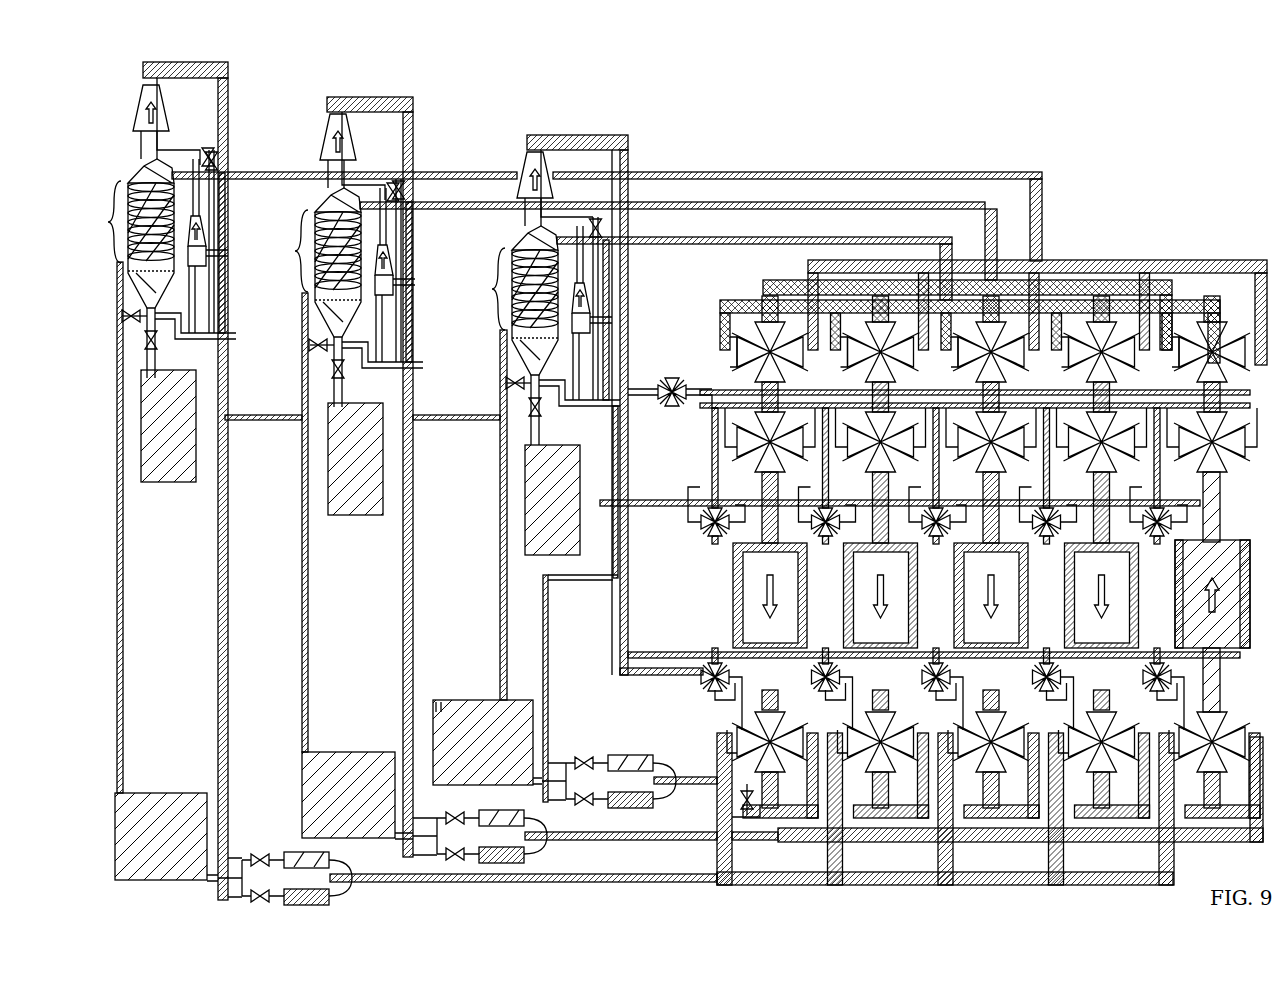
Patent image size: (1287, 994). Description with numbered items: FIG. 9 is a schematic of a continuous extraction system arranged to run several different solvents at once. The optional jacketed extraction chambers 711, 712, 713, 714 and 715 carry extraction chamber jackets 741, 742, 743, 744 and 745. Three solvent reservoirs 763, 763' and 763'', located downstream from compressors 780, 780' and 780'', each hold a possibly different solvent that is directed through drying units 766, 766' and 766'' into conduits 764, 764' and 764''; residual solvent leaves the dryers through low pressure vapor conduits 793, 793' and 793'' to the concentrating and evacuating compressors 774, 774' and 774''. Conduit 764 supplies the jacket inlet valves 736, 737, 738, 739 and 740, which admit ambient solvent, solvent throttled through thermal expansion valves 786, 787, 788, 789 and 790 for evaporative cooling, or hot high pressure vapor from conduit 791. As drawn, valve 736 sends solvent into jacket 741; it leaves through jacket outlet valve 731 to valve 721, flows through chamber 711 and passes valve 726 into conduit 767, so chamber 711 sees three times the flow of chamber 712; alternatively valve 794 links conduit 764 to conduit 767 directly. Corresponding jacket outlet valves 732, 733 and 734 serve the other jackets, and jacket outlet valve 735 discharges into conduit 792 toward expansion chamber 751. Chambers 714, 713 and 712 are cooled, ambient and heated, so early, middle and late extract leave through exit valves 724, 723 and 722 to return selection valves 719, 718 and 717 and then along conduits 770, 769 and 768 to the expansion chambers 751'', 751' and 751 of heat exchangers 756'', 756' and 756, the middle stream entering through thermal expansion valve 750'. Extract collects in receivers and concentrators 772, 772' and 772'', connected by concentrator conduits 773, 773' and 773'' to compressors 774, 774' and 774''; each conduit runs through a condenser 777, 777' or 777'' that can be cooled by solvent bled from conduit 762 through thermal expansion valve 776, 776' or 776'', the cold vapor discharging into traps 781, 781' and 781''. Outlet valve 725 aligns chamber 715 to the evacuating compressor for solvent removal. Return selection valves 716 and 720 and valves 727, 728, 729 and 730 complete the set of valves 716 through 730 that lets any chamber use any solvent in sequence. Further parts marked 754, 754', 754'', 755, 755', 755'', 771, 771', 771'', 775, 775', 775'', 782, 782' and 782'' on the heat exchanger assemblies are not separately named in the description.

The jacketed extraction chamber 711 is at (800, 588).
The jacketed extraction chamber 712 is at (910, 588).
The jacketed extraction chamber 713 is at (1020, 588).
The jacketed extraction chamber 714 is at (1130, 588).
The jacketed extraction chamber 715 is at (1250, 555).
The return selection valve 716 is at (755, 363).
The return selection valve 717 is at (865, 363).
The return selection valve 718 is at (975, 363).
The return selection valve 719 is at (1085, 363).
The return selection valve 720 is at (1195, 363).
The valve 721 is at (755, 453).
The exit valve 722 is at (865, 453).
The exit valve 723 is at (975, 453).
The exit valve 724 is at (1085, 453).
The outlet valve 725 is at (1195, 453).
The valve 726 is at (733, 735).
The valve 727 is at (905, 722).
The valve 728 is at (1015, 722).
The valve 729 is at (1126, 722).
The valve 730 is at (1235, 745).
The jacket outlet valve 731 is at (712, 536).
The valve 732 is at (822, 536).
The valve 733 is at (933, 536).
The valve 734 is at (1043, 536).
The jacket outlet valve 735 is at (1154, 536).
The jacket inlet valve 736 is at (712, 690).
The jacket inlet valve 737 is at (822, 690).
The jacket inlet valve 738 is at (933, 690).
The jacket inlet valve 739 is at (1043, 690).
The jacket inlet valve 740 is at (1154, 688).
The extraction chamber jacket 741 is at (733, 592).
The extraction chamber jacket 742 is at (846, 612).
The extraction chamber jacket 743 is at (956, 612).
The extraction chamber jacket 744 is at (1066, 612).
The extraction chamber jacket 745 is at (1176, 612).
The thermal expansion valve 750' is at (360, 178).
The expansion chamber 751 is at (514, 232).
The expansion chamber 751' is at (318, 196).
The expansion chamber 751'' is at (129, 164).
The hopper 754 is at (515, 351).
The hopper 754' is at (313, 313).
The hopper 754'' is at (126, 284).
The condenser coil 755 is at (509, 281).
The condenser coil 755' is at (310, 244).
The condenser coil 755'' is at (122, 213).
The heat exchanger 756 is at (482, 289).
The heat exchanger 756' is at (284, 251).
The heat exchanger 756'' is at (98, 222).
The conduit 762 is at (500, 538).
The solvent reservoir 763 is at (483, 730).
The solvent reservoir 763' is at (348, 783).
The solvent reservoir 763'' is at (161, 825).
The conduit 764 is at (685, 790).
The conduit 764' is at (651, 845).
The conduit 764'' is at (523, 886).
The drying unit 766 is at (604, 781).
The drying unit 766' is at (471, 836).
The drying unit 766'' is at (279, 878).
The conduit 767 is at (1020, 789).
The extraction solution conduit 768 is at (910, 237).
The middle extraction solution conduit 769 is at (960, 202).
The early extraction solution conduit 770 is at (995, 172).
The valve 771 is at (553, 418).
The valve 771' is at (306, 372).
The valve 771'' is at (117, 342).
The extract receiver and concentrator 772 is at (552, 509).
The extract receiver and concentrator 772' is at (354, 470).
The extract receiver and concentrator 772'' is at (167, 437).
The concentrator conduit 773 is at (627, 318).
The concentrator conduit 773' is at (423, 284).
The concentrator conduit 773'' is at (238, 261).
The concentrating and evacuating compressor 774 is at (618, 296).
The concentrating and evacuating compressor 774' is at (408, 260).
The concentrating and evacuating compressor 774'' is at (219, 231).
The valve 775 is at (627, 307).
The valve 775' is at (417, 269).
The valve 775'' is at (227, 240).
The thermal expansion valve 776 is at (500, 389).
The thermal expansion valve 776' is at (342, 366).
The thermal expansion valve 776'' is at (112, 323).
The condenser 777 is at (602, 413).
The condenser 777' is at (398, 343).
The condenser 777'' is at (211, 326).
The compressor 780 is at (516, 172).
The compressor 780' is at (316, 137).
The compressor 780'' is at (127, 108).
The trap 781 is at (711, 211).
The trap 781' is at (626, 192).
The trap 781'' is at (297, 150).
The exhaust duct 782 is at (577, 391).
The exhaust duct 782' is at (370, 467).
The exhaust duct 782'' is at (185, 471).
The thermal expansion valve 786 is at (728, 700).
The thermal expansion valve 787 is at (838, 700).
The thermal expansion valve 788 is at (949, 700).
The thermal expansion valve 789 is at (1059, 700).
The thermal expansion valve 790 is at (1169, 700).
The conduit 791 is at (618, 628).
The conduit 792 is at (609, 270).
The low pressure vapor conduit 793 is at (630, 580).
The low pressure vapor conduit 793' is at (401, 522).
The low pressure vapor conduit 793'' is at (209, 527).
The valve 794 is at (730, 815).